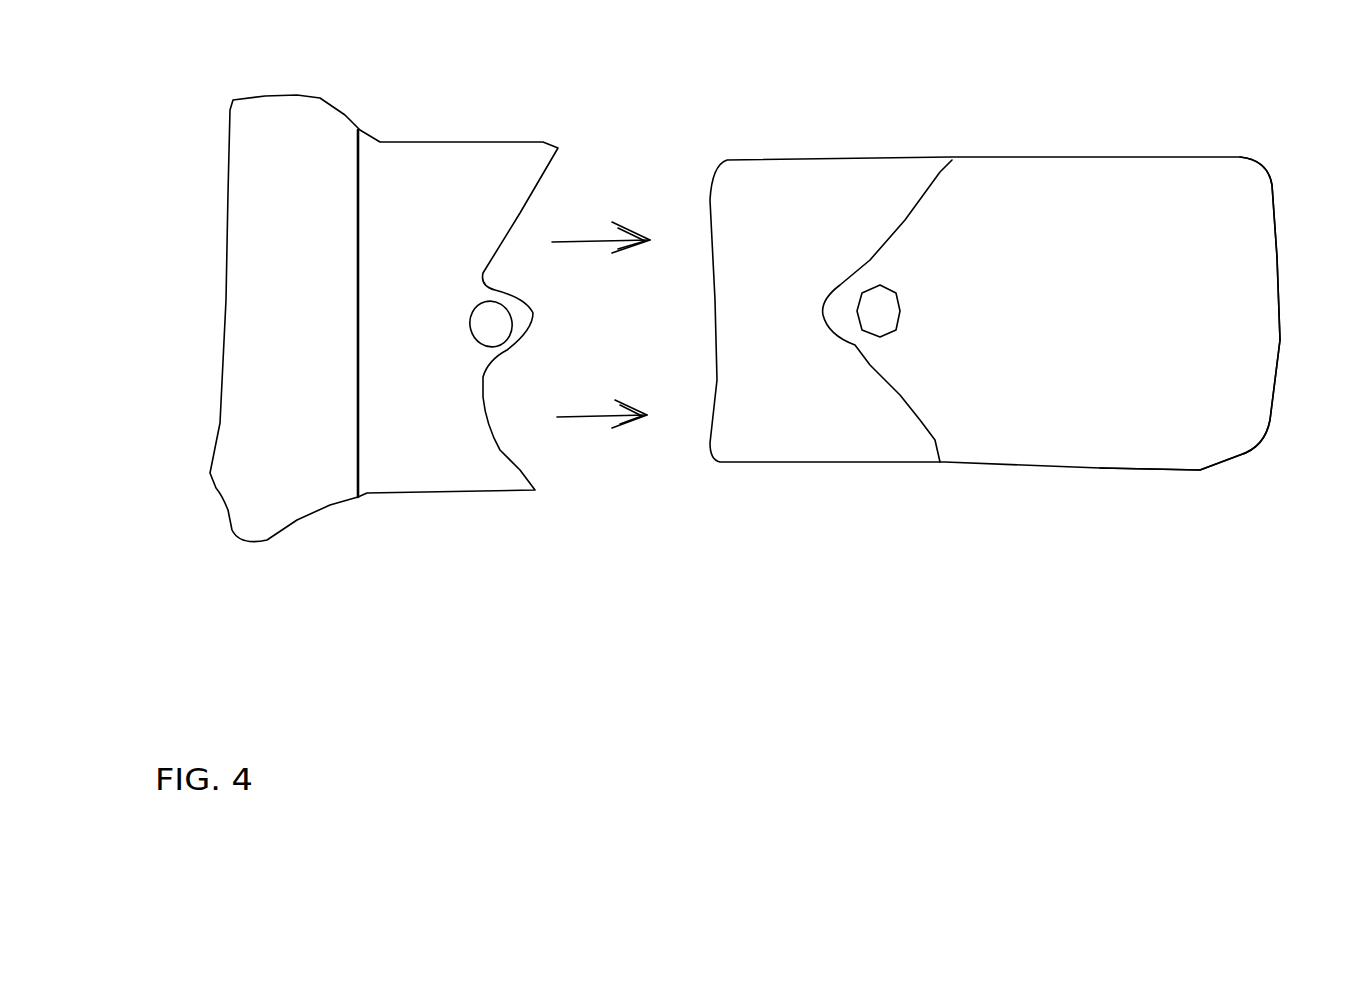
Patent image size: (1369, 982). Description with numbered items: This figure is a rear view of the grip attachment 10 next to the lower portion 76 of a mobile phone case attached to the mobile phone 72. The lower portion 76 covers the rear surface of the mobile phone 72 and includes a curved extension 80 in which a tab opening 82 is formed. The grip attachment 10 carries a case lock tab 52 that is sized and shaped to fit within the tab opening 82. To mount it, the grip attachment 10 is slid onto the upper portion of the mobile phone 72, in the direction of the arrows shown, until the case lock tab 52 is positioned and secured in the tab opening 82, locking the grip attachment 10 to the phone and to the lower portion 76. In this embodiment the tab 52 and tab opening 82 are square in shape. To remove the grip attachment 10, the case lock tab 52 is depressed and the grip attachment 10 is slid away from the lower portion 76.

The grip attachment 10 is at (322, 573).
The case lock tab 52 is at (450, 310).
The mobile phone 72 is at (815, 220).
The lower portion 76 is at (1142, 423).
The curved extension 80 is at (797, 303).
The tab opening 82 is at (917, 312).